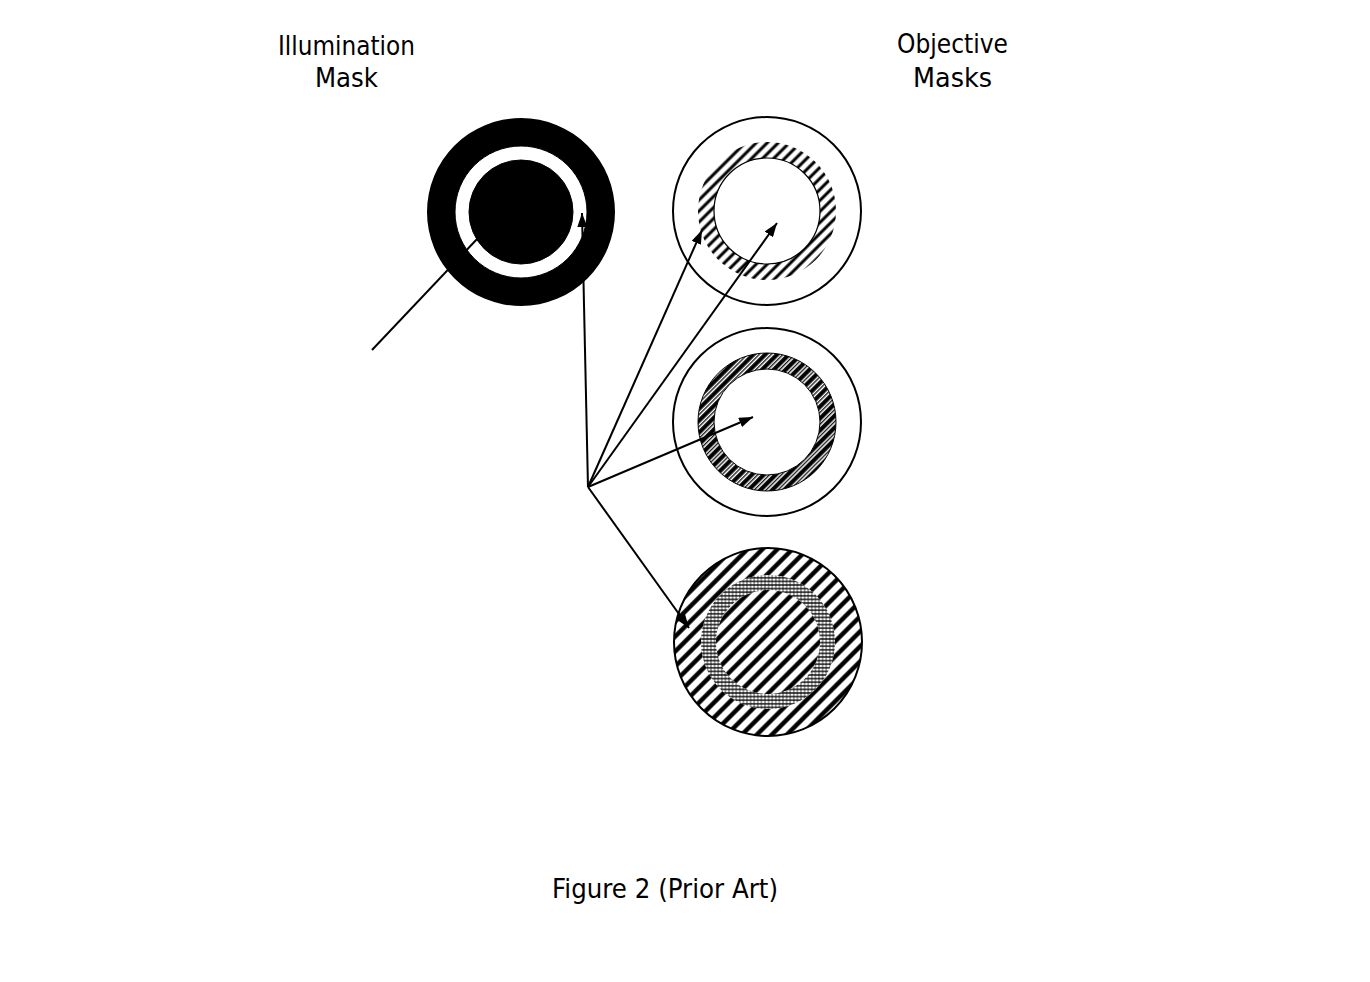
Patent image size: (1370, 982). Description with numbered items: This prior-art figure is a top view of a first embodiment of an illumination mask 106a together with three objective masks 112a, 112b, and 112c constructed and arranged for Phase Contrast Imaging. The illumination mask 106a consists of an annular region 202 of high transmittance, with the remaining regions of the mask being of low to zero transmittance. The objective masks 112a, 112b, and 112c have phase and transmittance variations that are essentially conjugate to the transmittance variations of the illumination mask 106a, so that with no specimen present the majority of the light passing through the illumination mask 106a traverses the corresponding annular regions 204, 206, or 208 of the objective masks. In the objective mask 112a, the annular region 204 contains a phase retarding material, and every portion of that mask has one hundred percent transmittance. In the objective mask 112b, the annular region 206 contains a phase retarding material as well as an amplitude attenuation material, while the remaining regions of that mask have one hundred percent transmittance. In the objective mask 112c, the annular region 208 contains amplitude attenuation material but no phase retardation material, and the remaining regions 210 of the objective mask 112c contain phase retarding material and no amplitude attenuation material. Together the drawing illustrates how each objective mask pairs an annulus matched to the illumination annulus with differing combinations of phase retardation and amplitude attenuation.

The illumination mask 106a is at (545, 373).
The annular region 202 is at (471, 194).
The objective mask 112a is at (942, 218).
The annular region 204 is at (840, 224).
The objective mask 112b is at (952, 425).
The annular region 206 is at (836, 409).
The objective mask 112c is at (1002, 688).
The annular region 208 is at (817, 602).
The remaining regions 210 is at (792, 660).